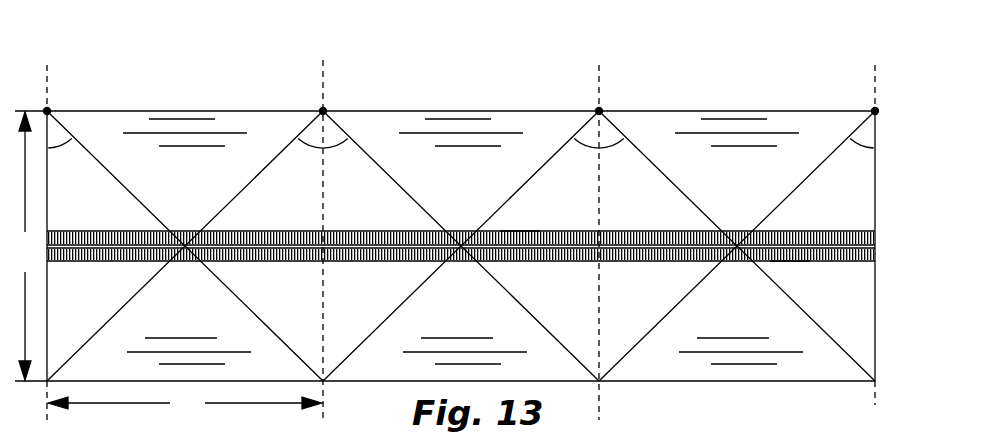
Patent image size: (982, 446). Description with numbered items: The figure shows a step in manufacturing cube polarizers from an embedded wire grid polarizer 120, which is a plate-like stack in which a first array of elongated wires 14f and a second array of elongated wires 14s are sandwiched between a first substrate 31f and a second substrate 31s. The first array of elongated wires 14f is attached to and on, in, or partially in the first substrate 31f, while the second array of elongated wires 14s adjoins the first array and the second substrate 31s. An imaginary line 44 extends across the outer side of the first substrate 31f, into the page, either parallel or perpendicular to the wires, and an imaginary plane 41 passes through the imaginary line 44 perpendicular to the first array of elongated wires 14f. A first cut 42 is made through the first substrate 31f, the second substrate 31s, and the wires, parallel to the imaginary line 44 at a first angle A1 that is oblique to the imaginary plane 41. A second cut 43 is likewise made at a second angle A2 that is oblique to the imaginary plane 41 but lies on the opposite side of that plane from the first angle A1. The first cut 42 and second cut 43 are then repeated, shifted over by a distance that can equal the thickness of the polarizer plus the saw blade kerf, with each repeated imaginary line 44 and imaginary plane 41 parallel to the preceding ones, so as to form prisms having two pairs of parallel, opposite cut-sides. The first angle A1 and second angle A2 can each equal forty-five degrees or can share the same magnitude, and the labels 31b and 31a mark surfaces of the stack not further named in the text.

The embedded wire grid polarizer 120 is at (146, 49).
The imaginary plane 41 is at (47, 72).
The imaginary line 44 is at (78, 97).
The first cut 42 is at (136, 197).
The second cut 43 is at (236, 195).
The top chord surface 31b is at (751, 88).
The first substrate 31f is at (404, 222).
The second substrate 31s is at (380, 309).
The adjacent surface 31a is at (814, 290).
The first array of elongated wires 14f is at (867, 239).
The second array of elongated wires 14s is at (867, 254).
The first angle A1 is at (62, 147).
The second angle A2 is at (312, 143).